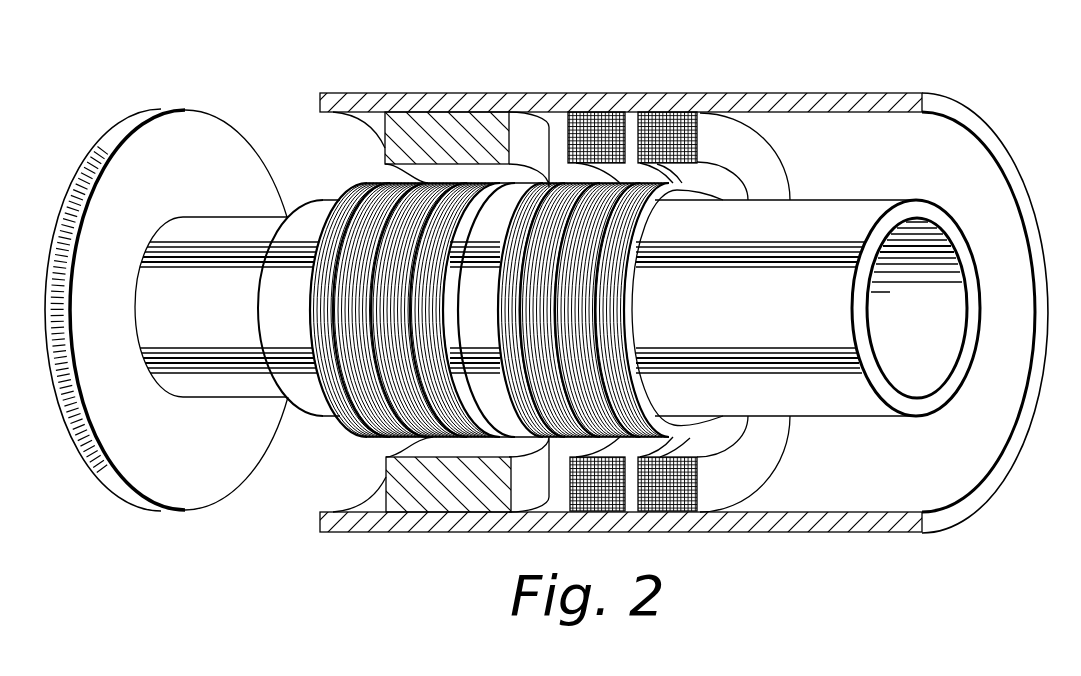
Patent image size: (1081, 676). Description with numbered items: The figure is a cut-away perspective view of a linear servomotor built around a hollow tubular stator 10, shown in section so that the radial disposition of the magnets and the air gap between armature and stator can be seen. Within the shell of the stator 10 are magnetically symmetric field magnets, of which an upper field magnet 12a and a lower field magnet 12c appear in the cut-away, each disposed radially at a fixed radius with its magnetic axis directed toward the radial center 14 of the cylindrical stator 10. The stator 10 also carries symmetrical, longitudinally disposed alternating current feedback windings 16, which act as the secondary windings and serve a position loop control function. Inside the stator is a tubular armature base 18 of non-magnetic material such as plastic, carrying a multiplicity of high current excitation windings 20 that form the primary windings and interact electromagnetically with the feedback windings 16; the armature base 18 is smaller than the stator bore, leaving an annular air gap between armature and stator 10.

The stator 10 is at (968, 74).
The field magnet 12a is at (461, 122).
The field magnet 12c is at (412, 497).
The radial center 14 is at (968, 380).
The alternating current feedback windings 16 is at (689, 508).
The tubular armature base 18 is at (981, 296).
The excitation windings 20 is at (659, 199).